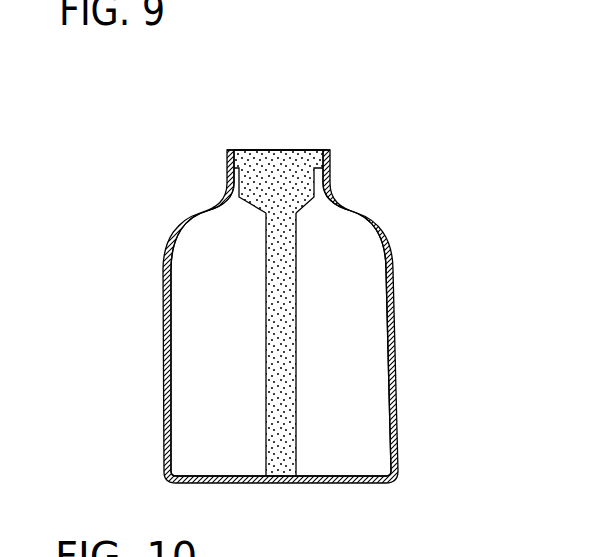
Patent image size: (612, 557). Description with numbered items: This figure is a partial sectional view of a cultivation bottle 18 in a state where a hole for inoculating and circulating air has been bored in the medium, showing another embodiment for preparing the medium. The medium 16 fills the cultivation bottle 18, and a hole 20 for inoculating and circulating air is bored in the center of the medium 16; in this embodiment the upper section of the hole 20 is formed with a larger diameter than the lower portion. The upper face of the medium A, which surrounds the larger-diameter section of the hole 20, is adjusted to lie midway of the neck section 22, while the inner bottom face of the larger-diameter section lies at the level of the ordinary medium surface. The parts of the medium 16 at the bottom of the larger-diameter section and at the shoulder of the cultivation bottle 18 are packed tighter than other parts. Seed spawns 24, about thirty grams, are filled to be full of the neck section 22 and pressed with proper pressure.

The medium 16 is at (370, 353).
The cultivation bottle 18 is at (395, 268).
The hole for inoculating and circulating air 20 is at (298, 450).
The neck section 22 is at (227, 176).
The seed spawns 24 is at (280, 157).
The upper face of the medium A is at (320, 185).